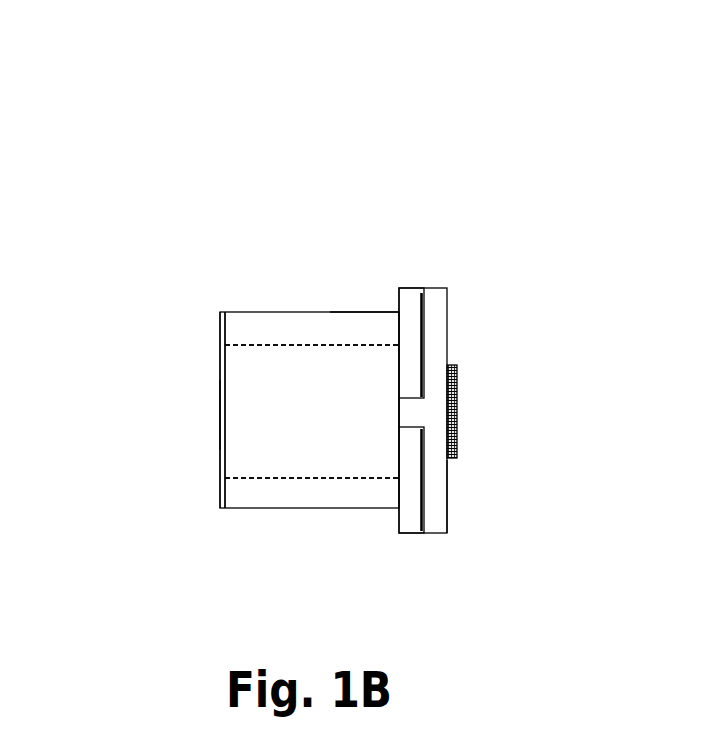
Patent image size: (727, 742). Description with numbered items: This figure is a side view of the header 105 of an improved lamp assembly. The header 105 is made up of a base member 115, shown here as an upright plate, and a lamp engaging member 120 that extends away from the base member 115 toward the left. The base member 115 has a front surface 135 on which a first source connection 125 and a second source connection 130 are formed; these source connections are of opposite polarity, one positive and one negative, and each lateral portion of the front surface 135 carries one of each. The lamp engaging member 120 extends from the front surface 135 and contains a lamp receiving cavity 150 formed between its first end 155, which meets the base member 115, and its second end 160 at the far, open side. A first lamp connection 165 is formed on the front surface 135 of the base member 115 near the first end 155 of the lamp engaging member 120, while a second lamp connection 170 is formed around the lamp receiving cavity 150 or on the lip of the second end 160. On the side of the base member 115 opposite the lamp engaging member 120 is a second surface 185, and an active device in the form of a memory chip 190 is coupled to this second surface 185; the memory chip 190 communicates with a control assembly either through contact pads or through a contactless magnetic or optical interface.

The header 105 is at (196, 145).
The base member 115 is at (423, 287).
The lamp engaging member 120 is at (303, 298).
The first source connection 125 is at (423, 497).
The second source connection 130 is at (422, 332).
The front surface 135 is at (398, 532).
The lamp receiving cavity 150 is at (308, 412).
The first end 155 is at (390, 311).
The second end 160 is at (233, 312).
The first lamp connection 165 is at (399, 412).
The second lamp connection 170 is at (220, 412).
The second surface 185 is at (448, 500).
The memory chip 190 is at (458, 405).